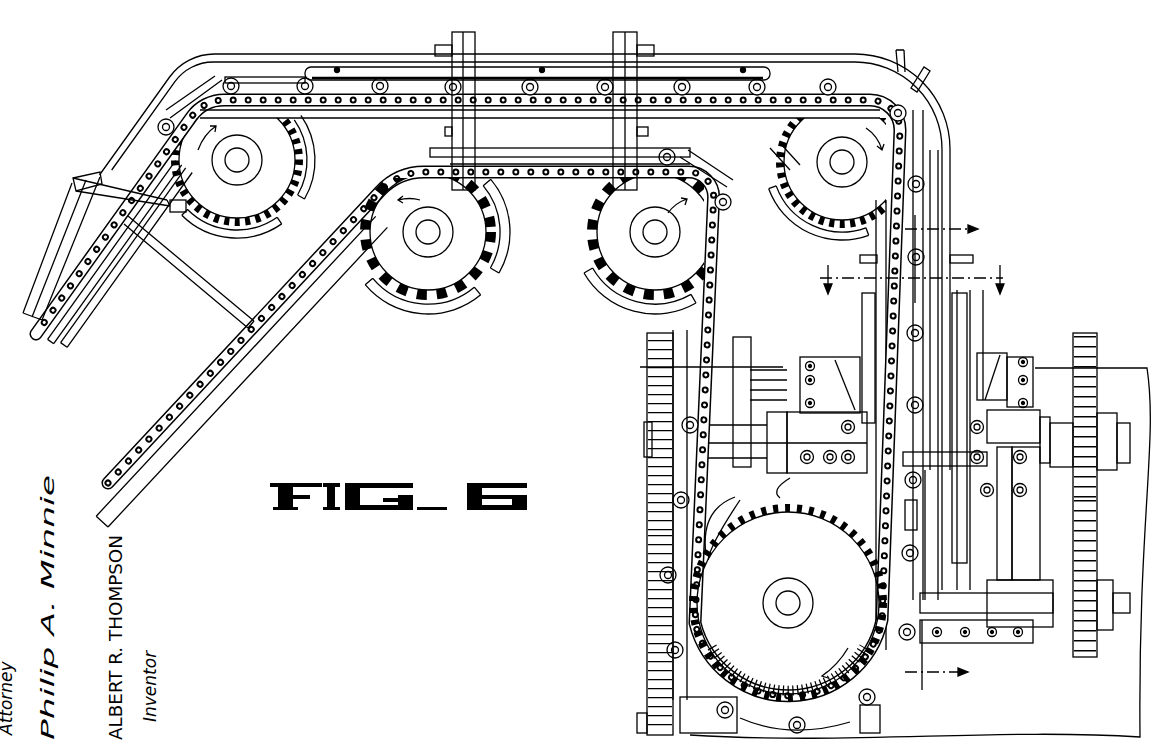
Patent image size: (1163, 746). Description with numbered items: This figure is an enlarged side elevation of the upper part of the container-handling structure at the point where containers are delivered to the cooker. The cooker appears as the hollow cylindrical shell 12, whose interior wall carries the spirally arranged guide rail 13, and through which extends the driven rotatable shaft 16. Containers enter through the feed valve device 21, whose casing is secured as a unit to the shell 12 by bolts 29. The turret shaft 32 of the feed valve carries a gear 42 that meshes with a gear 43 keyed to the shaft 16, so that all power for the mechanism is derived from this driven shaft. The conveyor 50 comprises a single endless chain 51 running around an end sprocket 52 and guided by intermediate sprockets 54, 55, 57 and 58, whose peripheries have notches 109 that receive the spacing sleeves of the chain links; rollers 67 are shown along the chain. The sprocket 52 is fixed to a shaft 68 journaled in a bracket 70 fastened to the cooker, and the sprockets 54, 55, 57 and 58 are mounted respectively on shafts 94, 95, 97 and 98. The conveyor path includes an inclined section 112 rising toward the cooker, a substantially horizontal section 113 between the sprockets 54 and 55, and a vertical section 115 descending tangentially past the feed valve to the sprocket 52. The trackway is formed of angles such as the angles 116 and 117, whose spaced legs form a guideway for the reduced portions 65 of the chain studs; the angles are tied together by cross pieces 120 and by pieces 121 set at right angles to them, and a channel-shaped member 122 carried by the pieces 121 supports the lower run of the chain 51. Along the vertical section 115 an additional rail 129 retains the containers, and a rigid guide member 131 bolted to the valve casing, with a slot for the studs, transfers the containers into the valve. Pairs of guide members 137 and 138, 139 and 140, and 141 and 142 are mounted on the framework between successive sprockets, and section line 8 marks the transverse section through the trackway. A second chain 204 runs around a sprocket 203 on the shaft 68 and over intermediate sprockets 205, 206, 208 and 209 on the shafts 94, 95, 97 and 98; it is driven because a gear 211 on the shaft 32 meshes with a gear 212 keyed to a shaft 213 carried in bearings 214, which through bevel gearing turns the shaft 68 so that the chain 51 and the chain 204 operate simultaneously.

The section line 8- 8 is at (913, 287).
The hollow cylindrical shell 12 is at (1090, 733).
The spirally arranged guide rail 13 is at (960, 452).
The rotatable shaft 16 is at (638, 727).
The feed valve device 21 is at (968, 378).
The bolts 29 is at (832, 362).
The shaft of the feed valve turret 32 is at (644, 452).
The gear 42 is at (647, 492).
The gear 43 is at (647, 681).
The conveyor 50 is at (116, 286).
The endless chain 51 is at (262, 77).
The end sprocket 52 is at (726, 507).
The intermediate sprocket 54 is at (808, 228).
The intermediate sprocket 55 is at (270, 224).
The intermediate sprocket 57 is at (445, 296).
The intermediate sprocket 58 is at (626, 300).
The reduced portions of the studs 65 is at (172, 108).
The roller 67 is at (232, 77).
The shaft 68 is at (792, 598).
The bracket 70 is at (827, 450).
The shaft 94 is at (840, 166).
The shaft 95 is at (240, 164).
The shaft 97 is at (433, 234).
The shaft 98 is at (652, 238).
The notches 109 is at (307, 180).
The inclined section 112 is at (112, 292).
The horizontal section 113 is at (525, 119).
The vertical section 115 is at (932, 240).
The angle 116 is at (308, 66).
The angle 117 is at (370, 119).
The cross pieces 120 is at (448, 45).
The pieces 121 is at (476, 50).
The channel-shaped member 122 is at (535, 158).
The rod or rail 129 is at (906, 56).
The guide member 131 is at (940, 520).
The guide member 137 is at (935, 462).
The guide member 138 is at (898, 511).
The guide member 139 is at (745, 67).
The guide member 140 is at (712, 119).
The guide member 141 is at (76, 234).
The guide member 142 is at (120, 263).
The sprocket 203 is at (763, 555).
The chain 204 is at (147, 440).
The intermediate sprocket 205 is at (805, 140).
The intermediate sprocket 206 is at (222, 130).
The intermediate sprocket 208 is at (404, 280).
The intermediate sprocket 209 is at (652, 282).
The gear 211 is at (1097, 508).
The gear 212 is at (1086, 656).
The shaft 213 is at (1118, 590).
The bearings 214 is at (1045, 624).